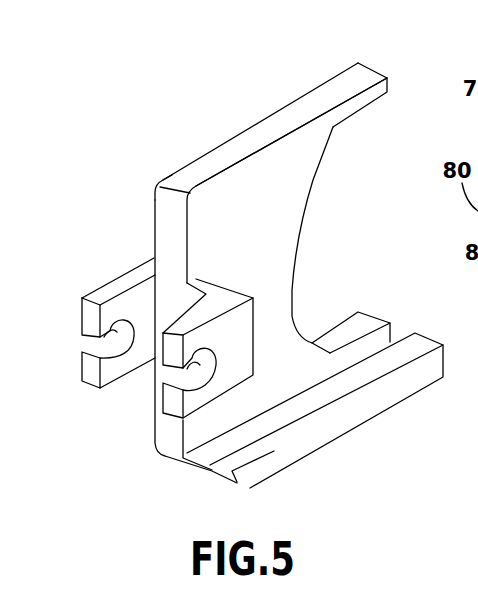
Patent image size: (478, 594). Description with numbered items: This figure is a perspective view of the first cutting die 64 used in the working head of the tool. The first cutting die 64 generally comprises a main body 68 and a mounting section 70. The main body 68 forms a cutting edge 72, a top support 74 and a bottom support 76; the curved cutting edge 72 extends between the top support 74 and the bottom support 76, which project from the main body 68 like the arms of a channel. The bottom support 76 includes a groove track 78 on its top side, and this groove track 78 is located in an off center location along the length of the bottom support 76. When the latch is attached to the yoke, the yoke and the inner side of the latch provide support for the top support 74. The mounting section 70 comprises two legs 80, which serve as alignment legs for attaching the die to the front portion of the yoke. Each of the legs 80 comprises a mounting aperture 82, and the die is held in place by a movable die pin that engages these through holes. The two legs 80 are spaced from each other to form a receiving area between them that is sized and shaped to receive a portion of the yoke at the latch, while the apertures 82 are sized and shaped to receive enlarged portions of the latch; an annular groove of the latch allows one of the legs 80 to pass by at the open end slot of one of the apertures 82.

The first cutting die 64 is at (258, 114).
The main body 68 is at (172, 178).
The mounting section 70 is at (98, 286).
The cutting edge 72 is at (300, 246).
The top support 74 is at (362, 72).
The bottom support 76 is at (408, 395).
The groove track 78 is at (398, 343).
The legs 80 is at (99, 385).
The mounting aperture 82 is at (114, 376).